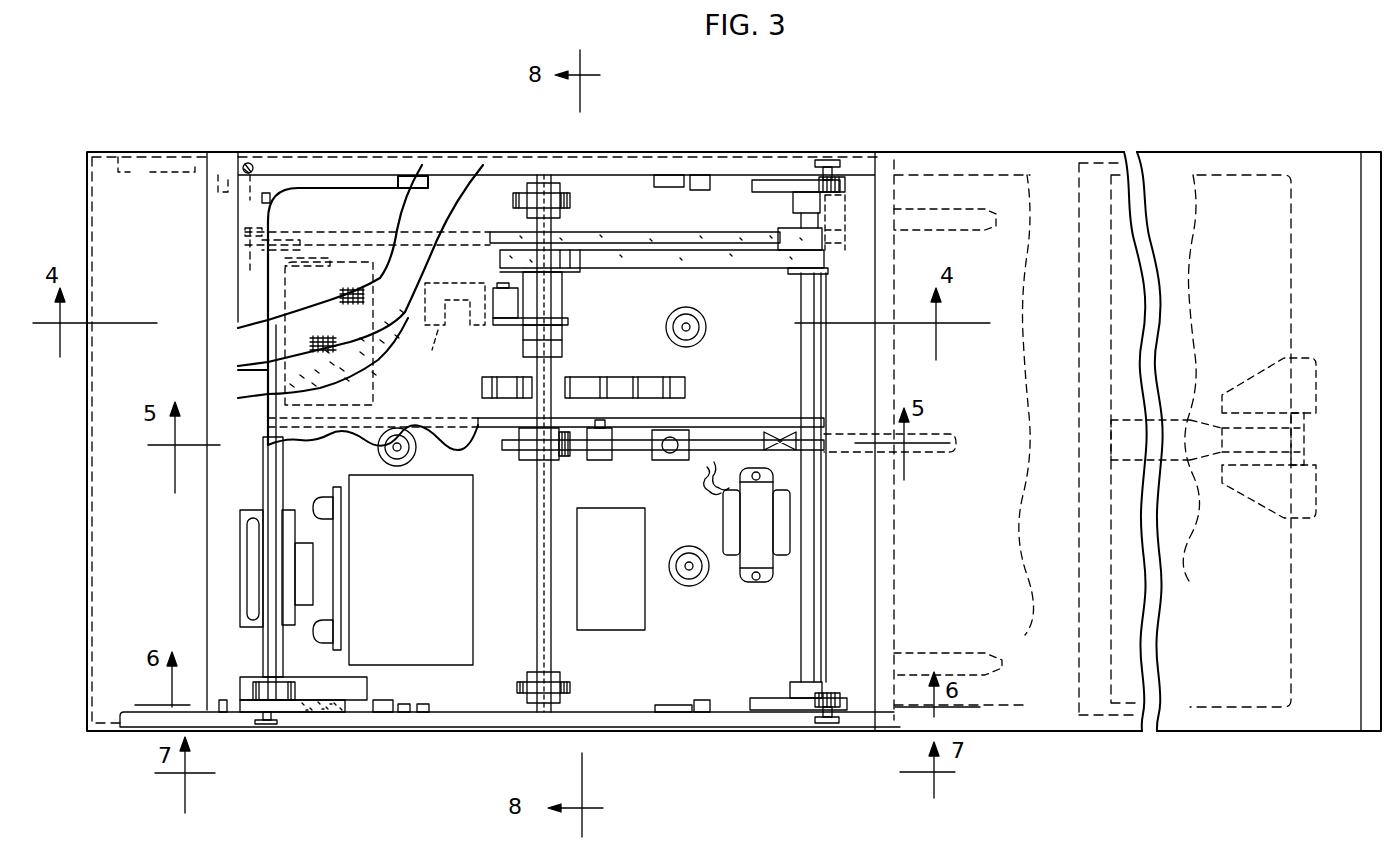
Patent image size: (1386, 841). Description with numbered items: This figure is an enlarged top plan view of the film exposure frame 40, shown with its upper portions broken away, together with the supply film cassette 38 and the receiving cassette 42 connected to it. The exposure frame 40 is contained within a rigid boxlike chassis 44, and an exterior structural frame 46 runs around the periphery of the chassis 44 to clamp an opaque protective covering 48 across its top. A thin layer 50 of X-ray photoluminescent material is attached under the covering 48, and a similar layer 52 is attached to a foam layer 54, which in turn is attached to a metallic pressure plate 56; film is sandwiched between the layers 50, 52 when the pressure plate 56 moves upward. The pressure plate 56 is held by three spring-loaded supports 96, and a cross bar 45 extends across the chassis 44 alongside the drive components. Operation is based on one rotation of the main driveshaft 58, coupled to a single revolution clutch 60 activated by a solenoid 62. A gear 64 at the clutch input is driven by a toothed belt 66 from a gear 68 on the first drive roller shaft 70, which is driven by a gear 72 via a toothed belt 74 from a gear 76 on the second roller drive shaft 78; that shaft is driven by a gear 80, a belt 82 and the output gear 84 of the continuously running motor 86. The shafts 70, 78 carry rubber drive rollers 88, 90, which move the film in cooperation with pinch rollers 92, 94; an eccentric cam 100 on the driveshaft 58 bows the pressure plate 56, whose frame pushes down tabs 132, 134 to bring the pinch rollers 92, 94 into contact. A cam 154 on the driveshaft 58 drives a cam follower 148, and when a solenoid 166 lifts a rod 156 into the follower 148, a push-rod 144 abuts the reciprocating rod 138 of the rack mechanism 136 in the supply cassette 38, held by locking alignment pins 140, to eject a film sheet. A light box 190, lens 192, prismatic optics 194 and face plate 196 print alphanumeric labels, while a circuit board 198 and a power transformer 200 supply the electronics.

The supply film cassette 38 is at (1261, 735).
The film exposure frame 40 is at (597, 733).
The receiving cassette 42 is at (155, 146).
The chassis 44 is at (652, 153).
The cross bar 45 is at (714, 417).
The exterior structural frame 46 is at (383, 173).
The protective covering 48 is at (400, 280).
The layer of X-ray photoluminescent material 50 is at (452, 200).
The layer of X-ray photoluminescent material 52 is at (462, 205).
The foam layer 54 is at (263, 372).
The pressure plate 56 is at (480, 218).
The main driveshaft 58 is at (555, 222).
The single revolution clutch 60 is at (545, 302).
The solenoid 62 is at (500, 328).
The gear 64 is at (562, 262).
The toothed belt 66 is at (707, 262).
The gear 68 is at (825, 272).
The first drive roller shaft 70 is at (817, 220).
The gear 72 is at (827, 222).
The toothed belt 74 is at (735, 238).
The gear 76 is at (248, 220).
The second roller drive shaft 78 is at (293, 183).
The gear 80 is at (245, 275).
The belt 82 is at (308, 240).
The output gear 84 is at (335, 240).
The motor 86 is at (258, 318).
The drive rollers 88 is at (792, 187).
The drive rollers 90 is at (228, 160).
The pinch rollers 92 is at (832, 167).
The pinch rollers 94 is at (267, 722).
The spring-loaded supports 96 is at (706, 332).
The eccentric cam 100 is at (552, 200).
The tab 132 is at (700, 180).
The tab 134 is at (382, 712).
The reciprocating rack mechanism 136 is at (1090, 195).
The reciprocating rod 138 is at (934, 453).
The locking alignment pins 140 is at (954, 227).
The push-rod 144 is at (809, 445).
The cam follower 148 is at (590, 453).
The cam 154 is at (515, 445).
The rod 156 is at (629, 447).
The solenoid 166 is at (655, 465).
The light box 190 is at (397, 620).
The lens 192 is at (285, 553).
The prismatic optics 194 is at (245, 527).
The face plate 196 is at (253, 593).
The circuit board 198 is at (625, 612).
The power transformer 200 is at (765, 577).